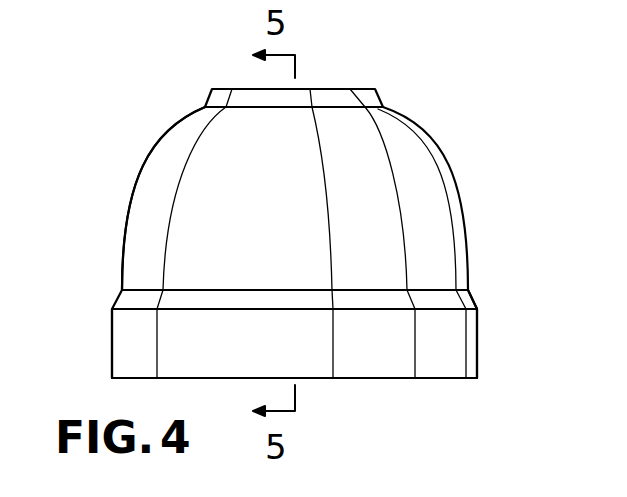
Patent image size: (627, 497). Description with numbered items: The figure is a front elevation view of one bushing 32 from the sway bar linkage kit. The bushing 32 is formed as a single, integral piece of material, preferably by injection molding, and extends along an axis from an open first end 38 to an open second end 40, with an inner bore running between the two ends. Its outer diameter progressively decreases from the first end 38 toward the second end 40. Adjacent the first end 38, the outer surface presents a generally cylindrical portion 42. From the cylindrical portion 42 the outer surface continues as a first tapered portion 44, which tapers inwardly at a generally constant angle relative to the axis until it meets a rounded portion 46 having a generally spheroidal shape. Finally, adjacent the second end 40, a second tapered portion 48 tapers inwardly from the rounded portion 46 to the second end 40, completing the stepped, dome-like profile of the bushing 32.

The bushing 32 is at (461, 169).
The open first end 38 is at (392, 379).
The open second end 40 is at (357, 88).
The cylindrical portion 42 is at (478, 345).
The first tapered portion 44 is at (468, 298).
The rounded portion 46 is at (146, 166).
The second tapered portion 48 is at (382, 100).